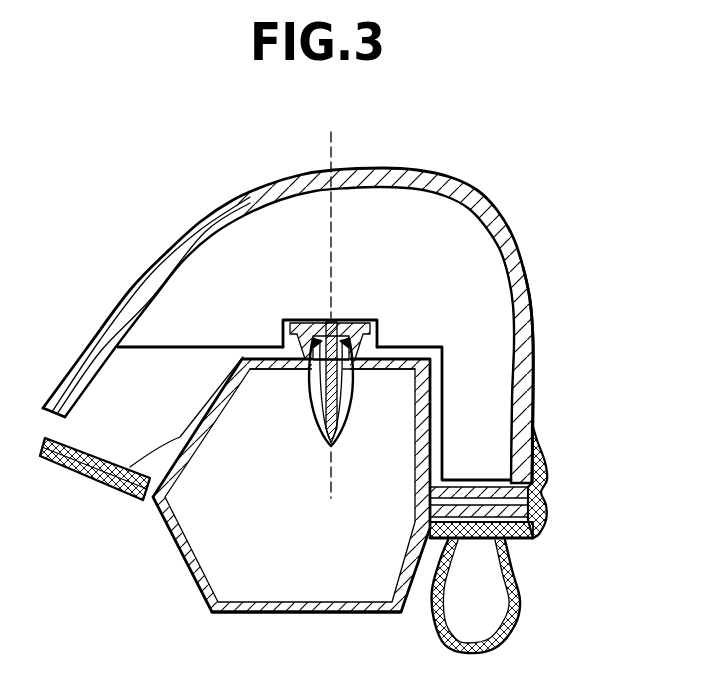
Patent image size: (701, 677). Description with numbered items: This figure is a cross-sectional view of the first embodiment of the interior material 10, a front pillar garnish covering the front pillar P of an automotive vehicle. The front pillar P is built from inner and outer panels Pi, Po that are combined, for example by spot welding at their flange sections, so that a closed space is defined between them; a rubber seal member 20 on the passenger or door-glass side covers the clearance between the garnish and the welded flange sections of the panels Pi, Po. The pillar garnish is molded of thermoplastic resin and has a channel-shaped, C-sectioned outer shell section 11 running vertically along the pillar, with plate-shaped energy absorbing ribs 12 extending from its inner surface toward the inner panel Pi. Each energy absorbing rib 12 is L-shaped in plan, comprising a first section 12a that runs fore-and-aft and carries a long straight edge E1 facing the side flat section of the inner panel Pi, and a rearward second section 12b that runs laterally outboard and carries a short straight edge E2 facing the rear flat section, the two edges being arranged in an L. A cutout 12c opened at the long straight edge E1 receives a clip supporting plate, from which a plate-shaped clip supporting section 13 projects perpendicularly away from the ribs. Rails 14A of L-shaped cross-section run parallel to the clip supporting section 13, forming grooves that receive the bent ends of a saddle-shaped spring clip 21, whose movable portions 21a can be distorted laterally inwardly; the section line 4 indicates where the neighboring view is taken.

The section line 4- 4 is at (331, 132).
The interior material 10 is at (355, 292).
The outer shell section 11 is at (535, 308).
The energy absorbing rib 12 is at (420, 205).
The first section 12a is at (177, 287).
The second section 12b is at (500, 412).
The cutout 12c is at (363, 350).
The clip supporting section 13 is at (330, 440).
The rail 14A is at (278, 360).
The seal member 20 is at (522, 592).
The clip 21 is at (291, 439).
The movable portion 21a is at (312, 398).
The long straight edge E1 is at (175, 357).
The short straight edge E2 is at (436, 407).
The front pillar P is at (235, 510).
The inner panel Pi is at (115, 490).
The outer panel Po is at (325, 613).